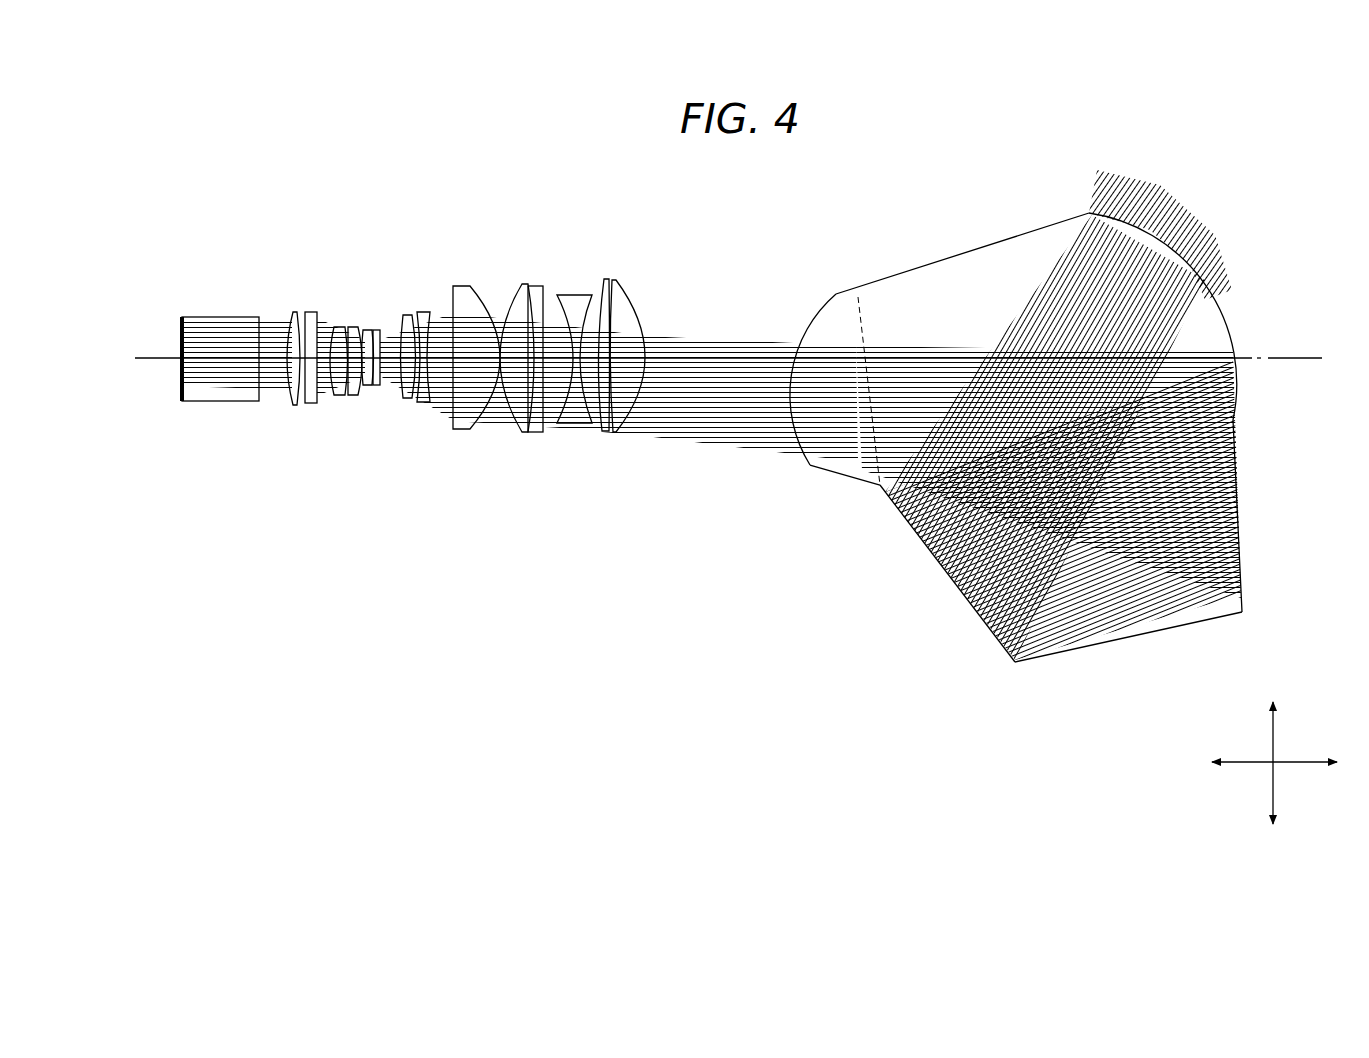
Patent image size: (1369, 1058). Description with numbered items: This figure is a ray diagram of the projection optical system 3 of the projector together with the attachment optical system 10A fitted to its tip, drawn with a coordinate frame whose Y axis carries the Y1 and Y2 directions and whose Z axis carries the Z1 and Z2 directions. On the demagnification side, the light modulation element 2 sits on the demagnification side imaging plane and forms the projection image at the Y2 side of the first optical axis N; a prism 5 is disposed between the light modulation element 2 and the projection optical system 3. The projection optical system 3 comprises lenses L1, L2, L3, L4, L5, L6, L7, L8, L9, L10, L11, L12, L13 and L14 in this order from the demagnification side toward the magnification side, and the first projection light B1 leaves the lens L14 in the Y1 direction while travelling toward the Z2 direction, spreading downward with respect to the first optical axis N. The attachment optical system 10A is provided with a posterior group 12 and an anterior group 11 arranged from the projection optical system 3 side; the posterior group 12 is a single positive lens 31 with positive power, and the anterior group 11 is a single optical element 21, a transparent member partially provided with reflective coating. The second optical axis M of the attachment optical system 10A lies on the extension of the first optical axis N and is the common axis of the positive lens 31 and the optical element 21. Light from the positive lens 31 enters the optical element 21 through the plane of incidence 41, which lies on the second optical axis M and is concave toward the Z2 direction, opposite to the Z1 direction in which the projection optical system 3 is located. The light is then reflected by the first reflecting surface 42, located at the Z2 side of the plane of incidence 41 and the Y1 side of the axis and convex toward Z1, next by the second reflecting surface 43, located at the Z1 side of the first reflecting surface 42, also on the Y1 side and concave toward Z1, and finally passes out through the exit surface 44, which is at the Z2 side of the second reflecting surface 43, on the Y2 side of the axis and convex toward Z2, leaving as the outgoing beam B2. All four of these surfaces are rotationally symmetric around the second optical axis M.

The light modulation element 2 is at (180, 335).
The projection optical system 3 is at (392, 480).
The prism 5 is at (222, 400).
The attachment optical system 10A is at (807, 209).
The anterior group 11 is at (848, 288).
The optical element 21 is at (1020, 415).
The posterior group 12 is at (640, 283).
The positive lens 31 is at (587, 367).
The plane of incidence 41 is at (840, 305).
The first reflecting surface 42 is at (1238, 610).
The second reflecting surface 43 is at (912, 537).
The exit surface 44 is at (1222, 320).
The lens L1 is at (293, 406).
The lens L2 is at (311, 404).
The lens L3 is at (336, 396).
The lens L4 is at (356, 395).
The lens L5 is at (367, 331).
The lens L6 is at (377, 331).
The lens L7 is at (408, 316).
The lens L8 is at (421, 403).
The lens L9 is at (458, 288).
The lens L10 is at (518, 283).
The lens L11 is at (537, 285).
The lens L12 is at (532, 433).
The lens L13 is at (578, 292).
The lens L14 is at (630, 288).
The first projection light B1 is at (609, 414).
The exit light beam B2 is at (1092, 190).
The first optical axis N is at (135, 357).
The second optical axis M is at (1310, 356).
The Y axis Y is at (1284, 780).
The Z axis Z is at (1290, 750).
The Y1 direction Y1 is at (1274, 807).
The Y2 direction Y2 is at (1274, 721).
The Z1 direction Z1 is at (1229, 762).
The Z2 direction Z2 is at (1320, 762).